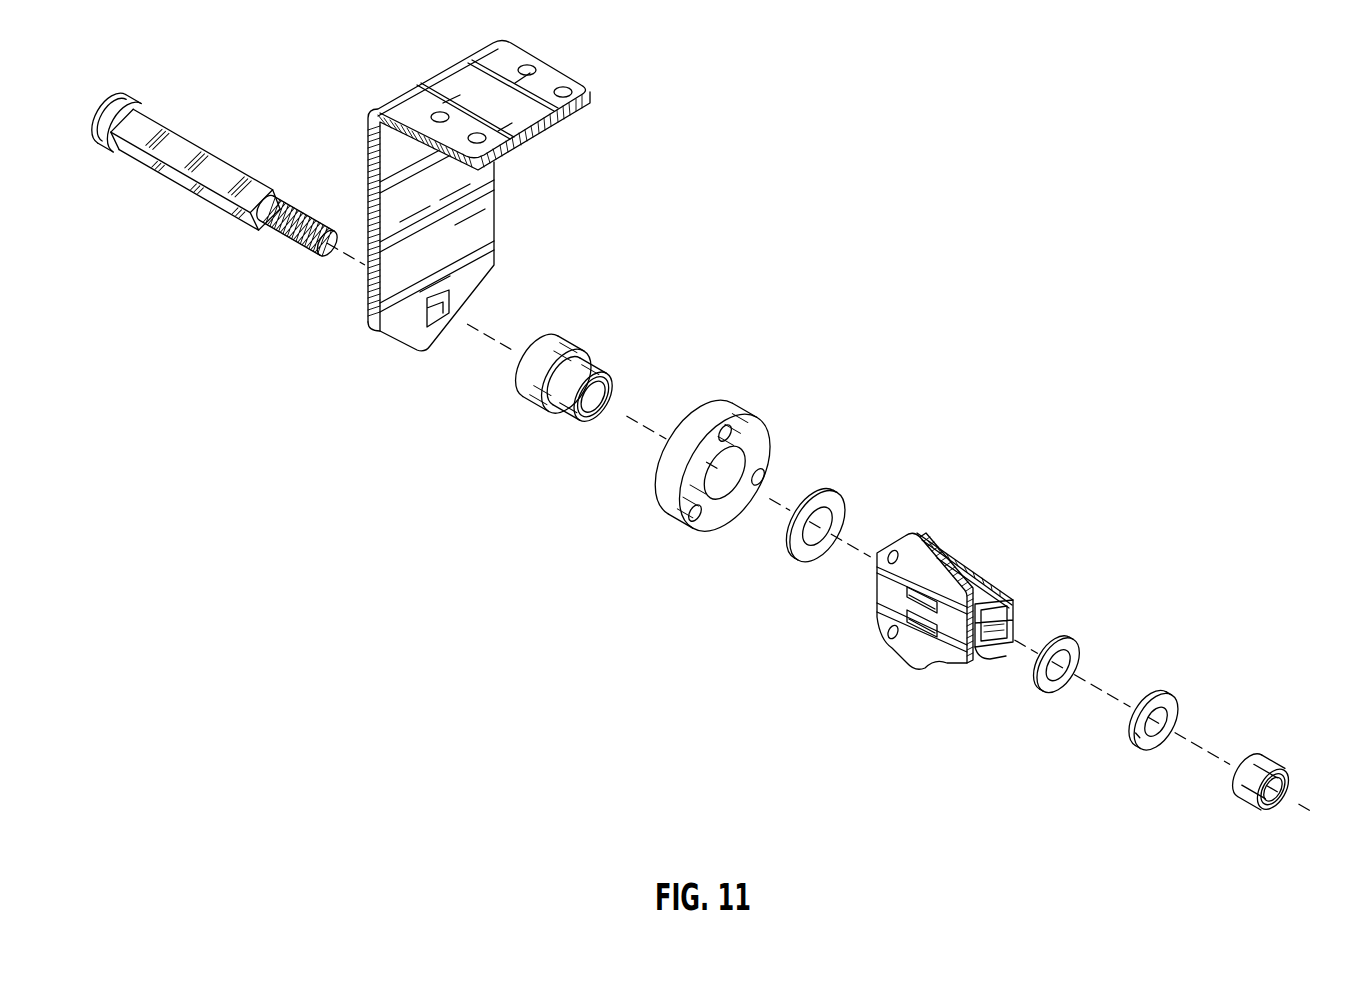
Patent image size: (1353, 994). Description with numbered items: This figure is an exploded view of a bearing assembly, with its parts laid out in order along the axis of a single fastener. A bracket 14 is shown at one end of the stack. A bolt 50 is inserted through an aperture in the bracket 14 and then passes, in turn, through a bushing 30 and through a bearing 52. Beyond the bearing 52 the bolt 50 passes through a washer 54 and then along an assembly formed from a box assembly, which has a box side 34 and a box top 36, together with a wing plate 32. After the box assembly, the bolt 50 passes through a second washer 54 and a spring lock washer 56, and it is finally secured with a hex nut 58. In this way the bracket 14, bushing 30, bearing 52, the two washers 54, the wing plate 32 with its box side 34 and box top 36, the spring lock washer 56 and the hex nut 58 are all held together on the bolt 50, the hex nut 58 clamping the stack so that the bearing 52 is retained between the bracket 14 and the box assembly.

The bracket 14 is at (554, 74).
The bushing 30 is at (597, 364).
The wing plate 32 is at (877, 582).
The box side 34 is at (1001, 653).
The box top 36 is at (983, 578).
The bolt 50 is at (170, 178).
The bearing 52 is at (741, 406).
The washer 54 is at (831, 490).
The spring lock washer 56 is at (1162, 697).
The hex nut 58 is at (1268, 760).